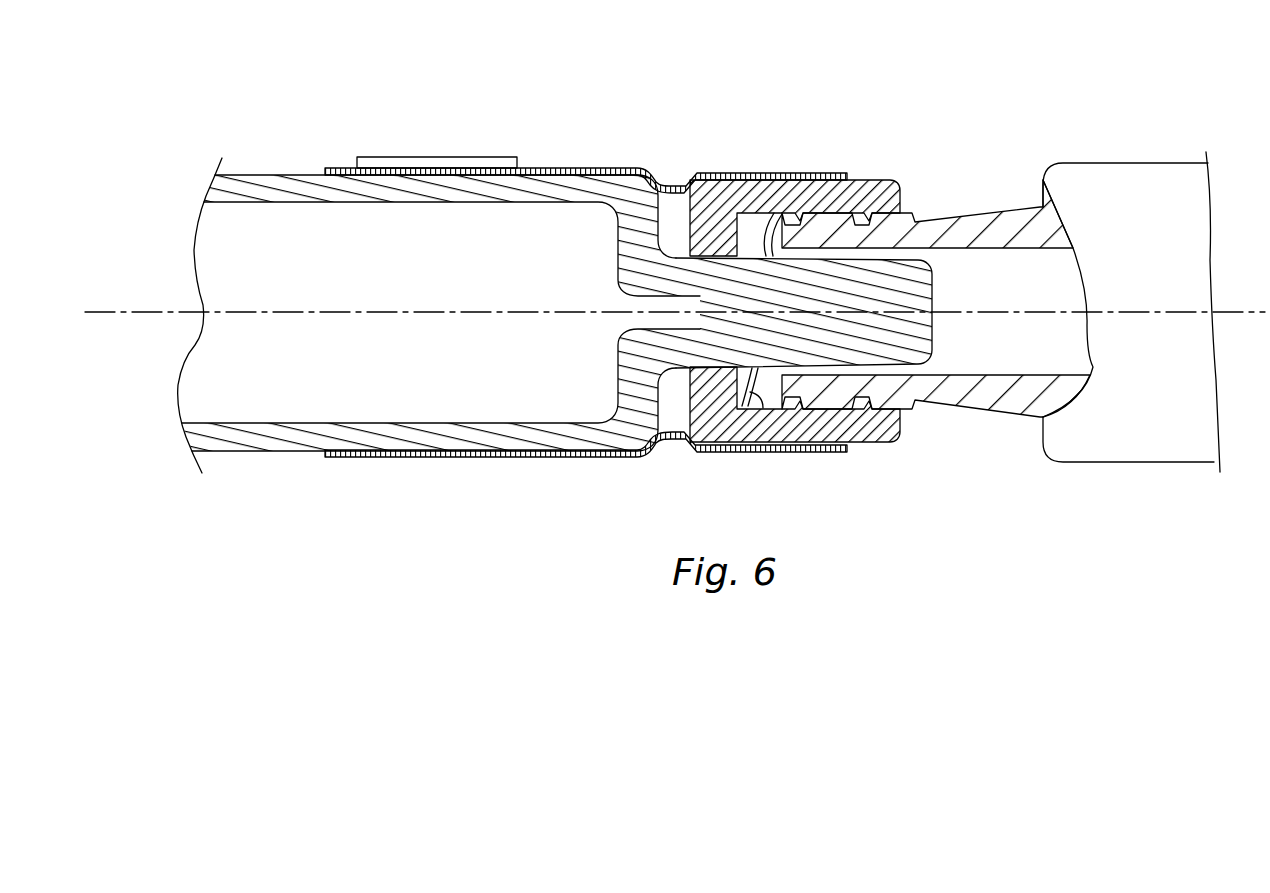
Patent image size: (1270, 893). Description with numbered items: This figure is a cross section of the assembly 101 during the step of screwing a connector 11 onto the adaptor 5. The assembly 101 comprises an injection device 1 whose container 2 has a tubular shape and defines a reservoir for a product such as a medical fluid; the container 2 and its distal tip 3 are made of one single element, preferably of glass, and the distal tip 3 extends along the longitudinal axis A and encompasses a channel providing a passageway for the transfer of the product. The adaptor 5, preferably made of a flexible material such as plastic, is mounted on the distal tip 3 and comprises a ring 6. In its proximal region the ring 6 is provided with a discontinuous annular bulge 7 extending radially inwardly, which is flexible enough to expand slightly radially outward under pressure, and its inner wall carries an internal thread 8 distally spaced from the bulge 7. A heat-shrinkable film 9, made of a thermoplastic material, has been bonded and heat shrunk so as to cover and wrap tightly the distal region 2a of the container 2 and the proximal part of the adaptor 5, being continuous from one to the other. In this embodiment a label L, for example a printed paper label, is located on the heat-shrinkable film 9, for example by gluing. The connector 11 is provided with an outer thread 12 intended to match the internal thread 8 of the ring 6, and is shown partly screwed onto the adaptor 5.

The injection device 1 is at (555, 319).
The container 2 is at (266, 172).
The distal region of the container 2a is at (552, 192).
The distal tip 3 is at (934, 264).
The adaptor 5 is at (881, 178).
The ring 6 is at (861, 441).
The discontinuous annular bulge 7 is at (753, 213).
The internal thread 8 is at (763, 408).
The heat-shrinkable film 9 is at (699, 170).
The connector 11 is at (980, 420).
The outer thread 12 is at (913, 200).
The assembly 101 is at (772, 275).
The label L is at (428, 157).
The longitudinal axis A is at (132, 311).